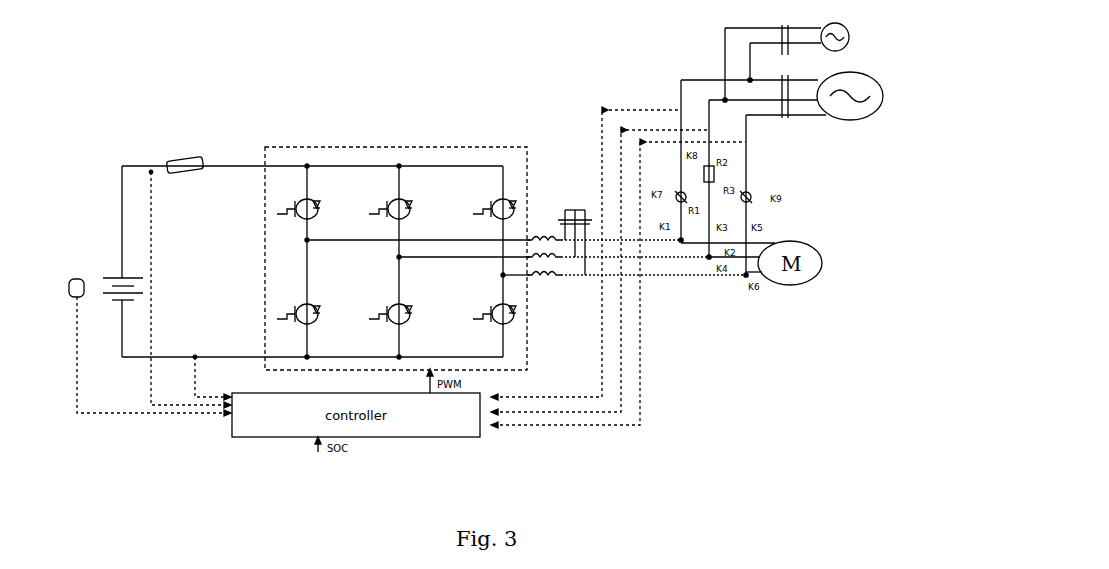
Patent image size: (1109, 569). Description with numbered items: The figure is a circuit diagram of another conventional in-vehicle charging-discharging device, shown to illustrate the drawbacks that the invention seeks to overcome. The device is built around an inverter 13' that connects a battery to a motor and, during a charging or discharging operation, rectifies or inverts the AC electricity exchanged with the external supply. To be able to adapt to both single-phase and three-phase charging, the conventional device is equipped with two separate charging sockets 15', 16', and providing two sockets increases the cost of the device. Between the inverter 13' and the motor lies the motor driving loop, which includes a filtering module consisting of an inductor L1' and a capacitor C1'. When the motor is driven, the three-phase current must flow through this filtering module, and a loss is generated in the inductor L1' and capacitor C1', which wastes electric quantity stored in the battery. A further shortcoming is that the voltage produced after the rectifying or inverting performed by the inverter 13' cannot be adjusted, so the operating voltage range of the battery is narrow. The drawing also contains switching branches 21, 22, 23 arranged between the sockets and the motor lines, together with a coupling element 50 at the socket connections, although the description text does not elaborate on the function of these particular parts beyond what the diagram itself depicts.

The inverter 13' is at (396, 243).
The charging socket 15' is at (819, 60).
The charging socket 16' is at (807, 87).
The first switching branch 21 is at (680, 112).
The second switching branch 22 is at (716, 179).
The third switching branch 23 is at (758, 196).
The coupling / plug 50 is at (797, 71).
The capacitor C1' is at (565, 236).
The inductor L1' is at (544, 246).